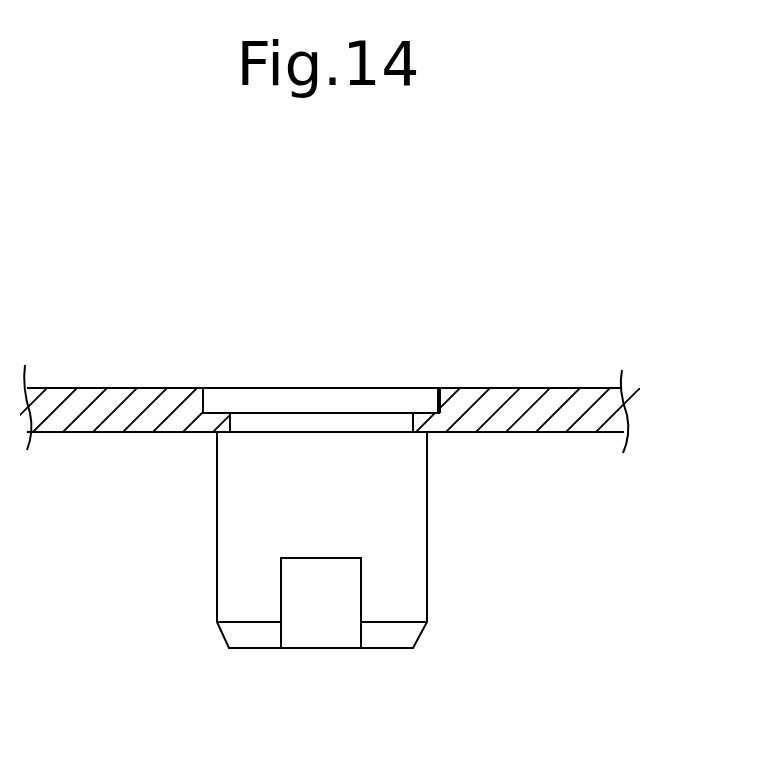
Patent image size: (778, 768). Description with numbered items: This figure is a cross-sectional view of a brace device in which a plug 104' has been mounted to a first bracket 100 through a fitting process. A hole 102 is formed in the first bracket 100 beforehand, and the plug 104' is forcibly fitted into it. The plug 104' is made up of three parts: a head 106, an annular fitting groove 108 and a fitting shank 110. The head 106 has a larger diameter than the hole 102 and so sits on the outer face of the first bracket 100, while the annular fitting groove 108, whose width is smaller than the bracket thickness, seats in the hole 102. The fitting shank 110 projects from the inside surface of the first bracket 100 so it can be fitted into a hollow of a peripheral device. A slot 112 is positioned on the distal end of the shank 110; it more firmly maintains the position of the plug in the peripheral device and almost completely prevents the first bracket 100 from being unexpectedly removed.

The first bracket 100 is at (84, 362).
The hole 102 is at (422, 425).
The plug 104' is at (410, 318).
The head 106 is at (303, 397).
The annular fitting groove 108 is at (315, 420).
The fitting shank 110 is at (417, 585).
The slot 112 is at (320, 633).